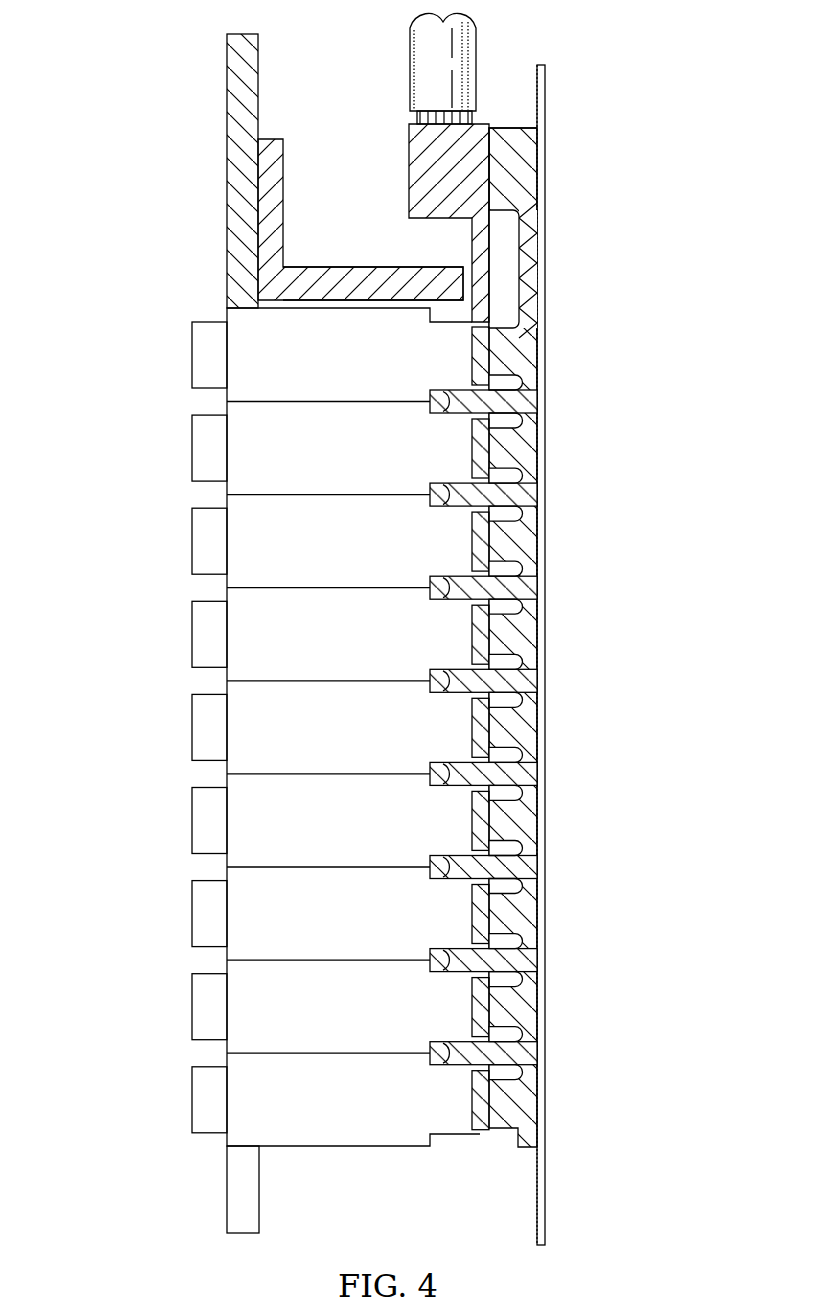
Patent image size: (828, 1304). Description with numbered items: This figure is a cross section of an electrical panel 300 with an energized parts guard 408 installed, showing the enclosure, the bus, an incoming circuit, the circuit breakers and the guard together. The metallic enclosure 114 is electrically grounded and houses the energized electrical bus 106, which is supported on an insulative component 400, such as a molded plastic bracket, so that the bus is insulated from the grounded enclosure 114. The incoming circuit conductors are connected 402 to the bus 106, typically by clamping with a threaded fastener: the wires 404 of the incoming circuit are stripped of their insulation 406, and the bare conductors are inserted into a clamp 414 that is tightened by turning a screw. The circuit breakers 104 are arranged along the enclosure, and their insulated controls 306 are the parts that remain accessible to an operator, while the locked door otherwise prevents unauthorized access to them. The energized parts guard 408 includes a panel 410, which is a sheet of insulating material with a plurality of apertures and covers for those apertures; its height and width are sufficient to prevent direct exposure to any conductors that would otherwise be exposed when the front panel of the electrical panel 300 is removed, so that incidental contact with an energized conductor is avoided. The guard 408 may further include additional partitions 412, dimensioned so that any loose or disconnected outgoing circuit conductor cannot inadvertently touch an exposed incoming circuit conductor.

The circuit breakers 104 is at (227, 318).
The energized electrical bus 106 is at (519, 283).
The metallic enclosure 114 is at (545, 376).
The electrical panel 300 is at (540, 222).
The insulated controls 306 is at (192, 447).
The insulative component 400 is at (511, 127).
The connection of incoming circuit conductors to the bus 402 is at (409, 170).
The wires 404 is at (410, 67).
The insulation 406 is at (476, 40).
The energized parts guard 408 is at (227, 84).
The panel 410 is at (227, 173).
The additional partitions 412 is at (372, 267).
The clamp 414 is at (408, 137).